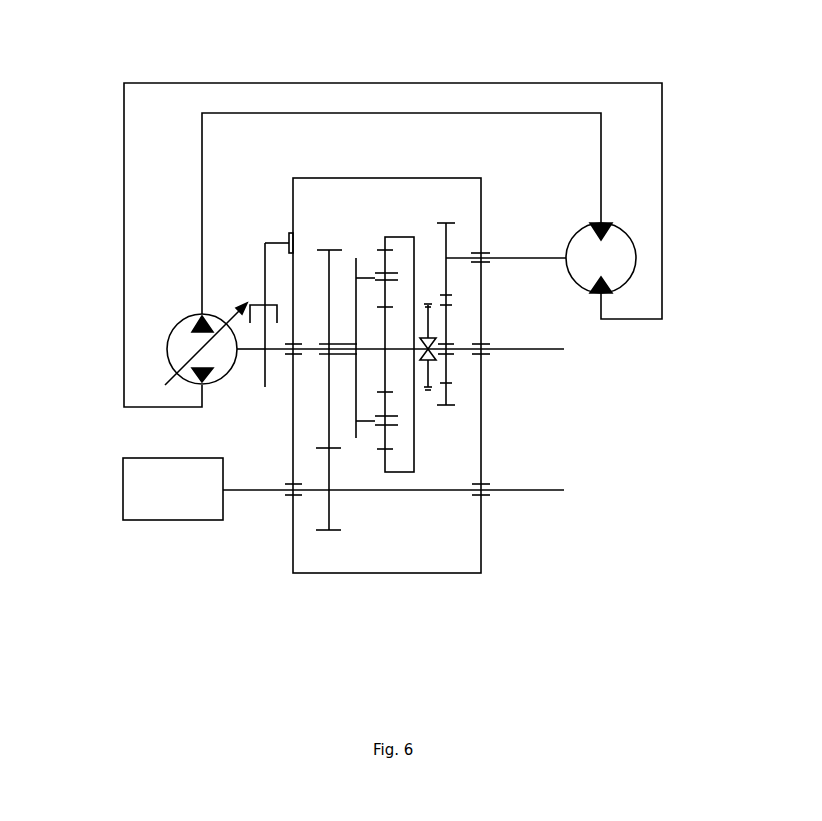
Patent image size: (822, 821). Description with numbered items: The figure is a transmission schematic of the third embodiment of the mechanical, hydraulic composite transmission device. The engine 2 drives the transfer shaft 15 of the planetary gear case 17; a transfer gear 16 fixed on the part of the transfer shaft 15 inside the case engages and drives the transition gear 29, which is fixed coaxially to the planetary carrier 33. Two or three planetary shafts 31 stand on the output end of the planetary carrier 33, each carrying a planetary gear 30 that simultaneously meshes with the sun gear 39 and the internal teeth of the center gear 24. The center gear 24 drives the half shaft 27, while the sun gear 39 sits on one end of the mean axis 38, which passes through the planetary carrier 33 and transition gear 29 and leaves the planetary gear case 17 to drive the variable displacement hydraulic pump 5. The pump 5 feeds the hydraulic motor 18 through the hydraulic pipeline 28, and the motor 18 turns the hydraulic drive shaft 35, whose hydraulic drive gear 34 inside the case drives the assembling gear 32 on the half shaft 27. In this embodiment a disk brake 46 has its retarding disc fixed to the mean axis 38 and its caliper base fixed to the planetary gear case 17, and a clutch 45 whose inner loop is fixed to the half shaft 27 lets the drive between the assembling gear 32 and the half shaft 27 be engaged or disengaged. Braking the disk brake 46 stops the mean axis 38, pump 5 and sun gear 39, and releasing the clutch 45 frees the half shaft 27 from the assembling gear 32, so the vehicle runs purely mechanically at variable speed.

The engine 2 is at (145, 508).
The variable displacement hydraulic pump 5 is at (180, 335).
The transfer shaft 15 is at (535, 490).
The transfer gear 16 is at (329, 502).
The planetary gear case 17 is at (308, 560).
The hydraulic motor 18 is at (612, 258).
The center gear 24 is at (402, 237).
The half shaft 27 is at (540, 349).
The hydraulic pipeline 28 is at (124, 355).
The transition gear 29 is at (328, 315).
The planetary gear 30 is at (387, 438).
The planetary shaft 31 is at (373, 277).
The assembling gear 32 is at (446, 321).
The planetary carrier 33 is at (355, 298).
The hydraulic drive gear 34 is at (447, 243).
The hydraulic drive shaft 35 is at (515, 257).
The mean axis 38 is at (250, 349).
The sun gear 39 is at (446, 380).
The clutch 45 is at (446, 359).
The disk brake 46 is at (247, 303).